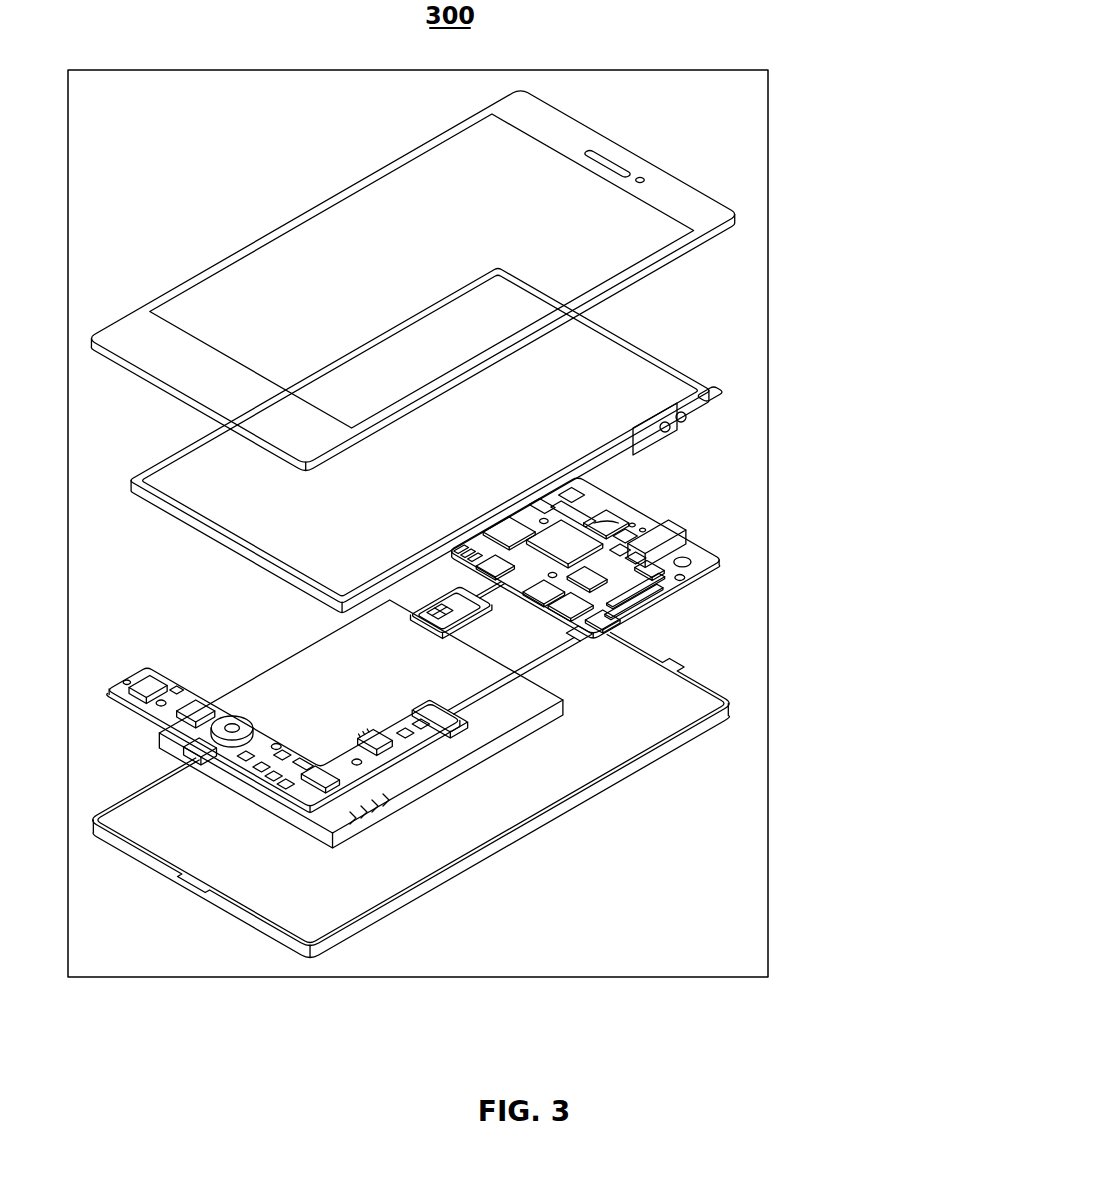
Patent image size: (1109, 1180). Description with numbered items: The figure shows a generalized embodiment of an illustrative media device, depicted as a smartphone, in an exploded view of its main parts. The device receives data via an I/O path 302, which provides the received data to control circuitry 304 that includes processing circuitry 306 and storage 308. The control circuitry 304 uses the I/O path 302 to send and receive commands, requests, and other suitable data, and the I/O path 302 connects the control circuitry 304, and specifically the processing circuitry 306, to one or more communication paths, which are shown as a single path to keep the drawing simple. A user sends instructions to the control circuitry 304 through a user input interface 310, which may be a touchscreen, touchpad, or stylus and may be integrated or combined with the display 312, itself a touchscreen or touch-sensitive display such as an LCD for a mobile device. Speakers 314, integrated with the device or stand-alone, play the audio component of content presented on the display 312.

The I/O path 302 is at (526, 734).
The control circuitry 304 is at (666, 616).
The processing circuitry 306 is at (655, 566).
The storage 308 is at (590, 556).
The user input interface 310 is at (654, 390).
The display 312 is at (702, 397).
The speakers 314 is at (620, 154).